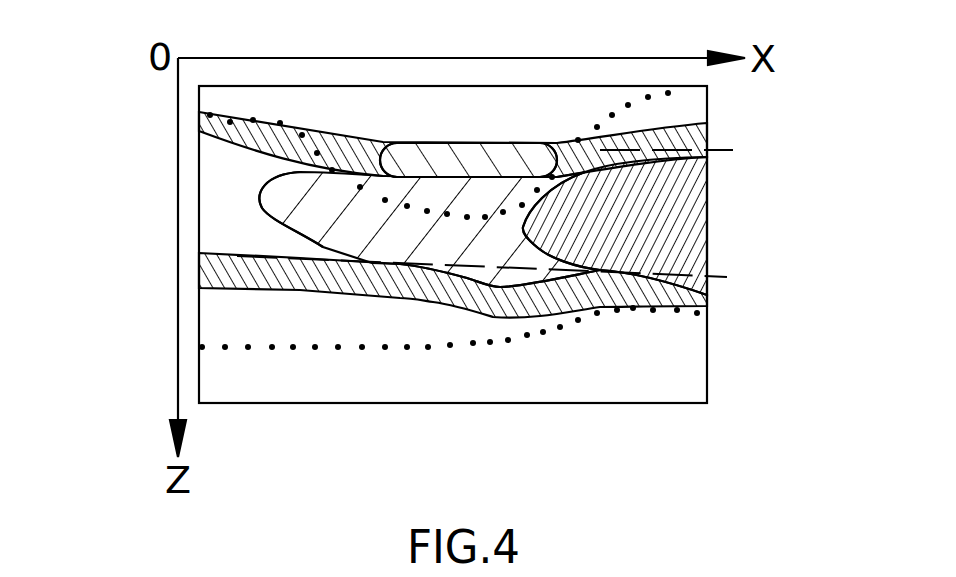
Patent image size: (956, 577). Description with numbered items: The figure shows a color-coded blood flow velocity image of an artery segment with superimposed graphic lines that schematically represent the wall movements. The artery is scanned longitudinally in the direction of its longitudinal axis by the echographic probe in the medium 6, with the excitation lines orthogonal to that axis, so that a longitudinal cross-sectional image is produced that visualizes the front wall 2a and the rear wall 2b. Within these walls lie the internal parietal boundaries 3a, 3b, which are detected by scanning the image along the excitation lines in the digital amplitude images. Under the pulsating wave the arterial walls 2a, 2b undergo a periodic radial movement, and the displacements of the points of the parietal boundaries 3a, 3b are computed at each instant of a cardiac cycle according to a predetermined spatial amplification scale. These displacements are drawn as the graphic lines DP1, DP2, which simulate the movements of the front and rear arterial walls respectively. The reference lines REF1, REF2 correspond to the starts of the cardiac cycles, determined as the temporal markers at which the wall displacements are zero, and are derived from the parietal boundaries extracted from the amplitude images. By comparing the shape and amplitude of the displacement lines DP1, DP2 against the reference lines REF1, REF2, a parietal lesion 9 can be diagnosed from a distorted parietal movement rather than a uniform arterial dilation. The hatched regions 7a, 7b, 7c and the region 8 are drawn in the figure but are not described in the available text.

The front wall 2a is at (255, 132).
The rear wall 2b is at (245, 264).
The internal parietal boundary 3a is at (247, 167).
The internal parietal boundary 3b is at (244, 236).
The medium 6 is at (645, 350).
The high density region 7a is at (647, 213).
The intermediate density region 7b is at (477, 243).
The low density region 7c is at (277, 237).
The upper space 8 is at (413, 100).
The parietal lesion 9 is at (471, 152).
The graphic line DP1 is at (660, 110).
The graphic line DP2 is at (663, 323).
The reference position REF1 is at (802, 140).
The reference position REF2 is at (790, 280).